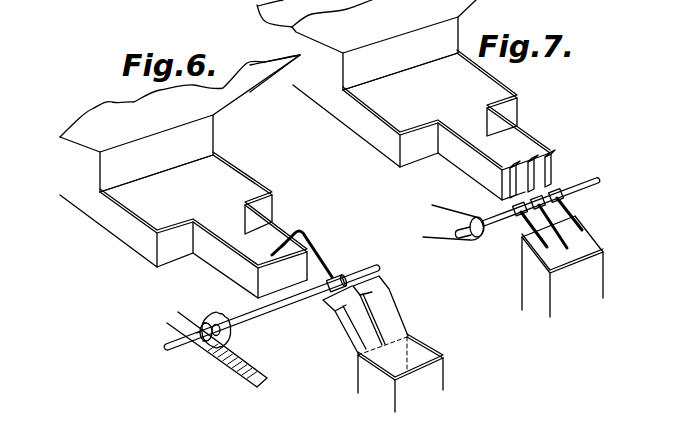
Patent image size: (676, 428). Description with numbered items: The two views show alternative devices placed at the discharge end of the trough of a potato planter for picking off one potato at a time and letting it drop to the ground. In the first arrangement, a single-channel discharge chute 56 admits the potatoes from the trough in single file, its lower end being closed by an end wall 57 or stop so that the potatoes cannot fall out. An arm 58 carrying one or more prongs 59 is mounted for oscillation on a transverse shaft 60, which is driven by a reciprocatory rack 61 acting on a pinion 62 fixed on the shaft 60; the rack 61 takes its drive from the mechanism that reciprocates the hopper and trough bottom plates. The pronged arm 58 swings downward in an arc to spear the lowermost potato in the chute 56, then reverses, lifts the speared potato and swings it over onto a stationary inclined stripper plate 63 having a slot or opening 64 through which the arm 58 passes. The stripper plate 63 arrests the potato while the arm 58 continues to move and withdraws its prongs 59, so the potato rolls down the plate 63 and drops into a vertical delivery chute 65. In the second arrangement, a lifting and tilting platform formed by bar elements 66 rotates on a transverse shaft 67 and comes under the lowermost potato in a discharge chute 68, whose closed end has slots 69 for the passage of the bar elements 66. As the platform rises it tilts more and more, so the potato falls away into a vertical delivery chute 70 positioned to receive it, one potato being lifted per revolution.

In FIG. 6, the discharge chute 56 is at (237, 247).
In FIG. 6, the end wall 57 is at (322, 266).
In FIG. 6, the arm 58 is at (316, 244).
In FIG. 6, the prongs 59 is at (281, 241).
In FIG. 6, the transverse shaft 60 is at (276, 310).
In FIG. 6, the reciprocatory rack 61 is at (228, 362).
In FIG. 6, the pinion 62 is at (228, 311).
In FIG. 6, the stripper plate 63 is at (376, 315).
In FIG. 6, the slot 64 is at (372, 297).
In FIG. 6, the vertical delivery chute 65 is at (443, 376).
In FIG. 7, the bar elements 66 is at (572, 213).
In FIG. 7, the transverse shaft 67 is at (579, 187).
In FIG. 7, the discharge chute 68 is at (524, 138).
In FIG. 7, the slots 69 is at (552, 158).
In FIG. 7, the vertical delivery chute 70 is at (588, 245).